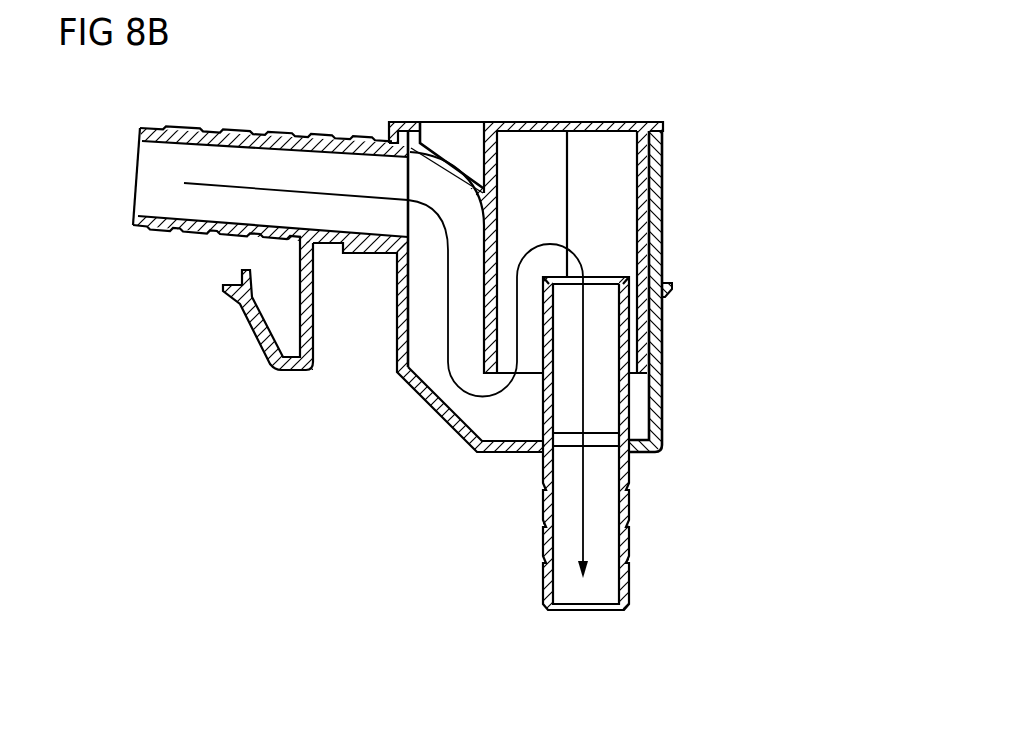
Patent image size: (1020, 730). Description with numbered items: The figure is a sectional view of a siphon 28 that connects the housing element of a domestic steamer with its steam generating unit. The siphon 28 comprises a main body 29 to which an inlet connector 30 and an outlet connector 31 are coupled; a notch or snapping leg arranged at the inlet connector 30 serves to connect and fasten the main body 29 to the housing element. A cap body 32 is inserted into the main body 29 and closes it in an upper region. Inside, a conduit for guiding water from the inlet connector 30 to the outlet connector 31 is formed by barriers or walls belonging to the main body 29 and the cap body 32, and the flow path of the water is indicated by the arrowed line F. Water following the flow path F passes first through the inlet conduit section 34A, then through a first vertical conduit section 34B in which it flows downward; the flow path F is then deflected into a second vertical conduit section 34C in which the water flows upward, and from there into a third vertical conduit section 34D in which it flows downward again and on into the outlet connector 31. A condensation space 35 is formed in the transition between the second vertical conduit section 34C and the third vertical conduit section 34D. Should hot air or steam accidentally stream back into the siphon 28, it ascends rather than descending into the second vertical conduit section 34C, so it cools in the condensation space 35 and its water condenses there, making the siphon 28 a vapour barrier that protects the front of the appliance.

The siphon 28 is at (281, 491).
The main body 29 is at (435, 413).
The inlet connector 30 is at (253, 136).
The outlet connector 31 is at (627, 588).
The cap body 32 is at (627, 128).
The inlet conduit section 34A is at (329, 170).
The first vertical conduit section 34B is at (445, 184).
The second vertical conduit section 34C is at (507, 310).
The third vertical conduit section 34D is at (603, 340).
The condensation space 35 is at (603, 197).
The flow path F is at (376, 372).